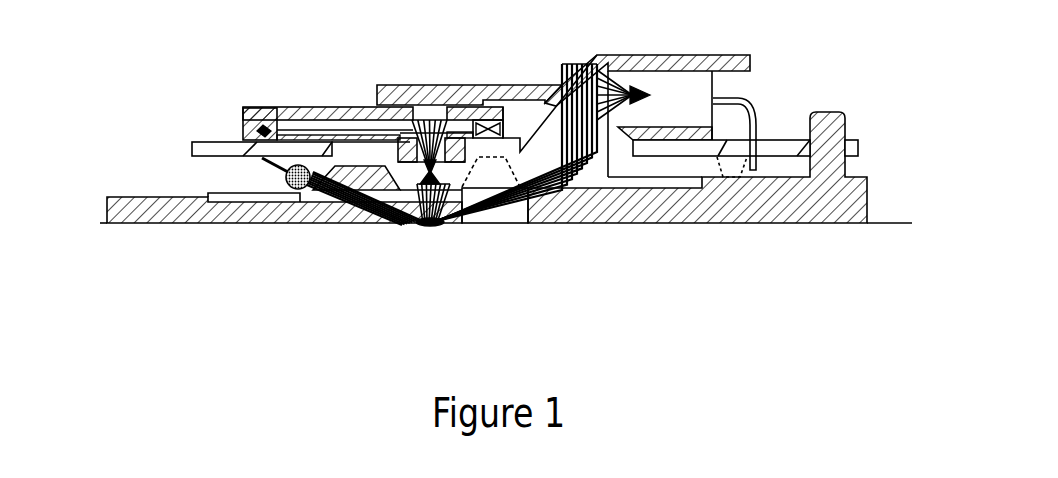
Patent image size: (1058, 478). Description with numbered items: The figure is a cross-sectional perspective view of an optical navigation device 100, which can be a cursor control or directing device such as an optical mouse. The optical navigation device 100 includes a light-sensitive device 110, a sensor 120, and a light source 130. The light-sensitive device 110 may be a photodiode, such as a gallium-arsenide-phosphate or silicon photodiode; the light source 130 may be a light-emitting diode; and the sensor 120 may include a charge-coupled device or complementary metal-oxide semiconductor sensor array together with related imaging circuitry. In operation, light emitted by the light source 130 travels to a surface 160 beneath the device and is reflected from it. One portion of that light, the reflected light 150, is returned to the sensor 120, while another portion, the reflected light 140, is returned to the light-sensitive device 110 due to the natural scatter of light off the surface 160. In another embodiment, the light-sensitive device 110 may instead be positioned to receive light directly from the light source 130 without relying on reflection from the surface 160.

The optical navigation device 100 is at (98, 32).
The light-sensitive device 110 is at (252, 172).
The sensor 120 is at (423, 108).
The light source 130 is at (728, 87).
The reflected light to light-sensitive device 140 is at (326, 230).
The reflected light to sensor 150 is at (442, 237).
The surface 160 is at (872, 230).